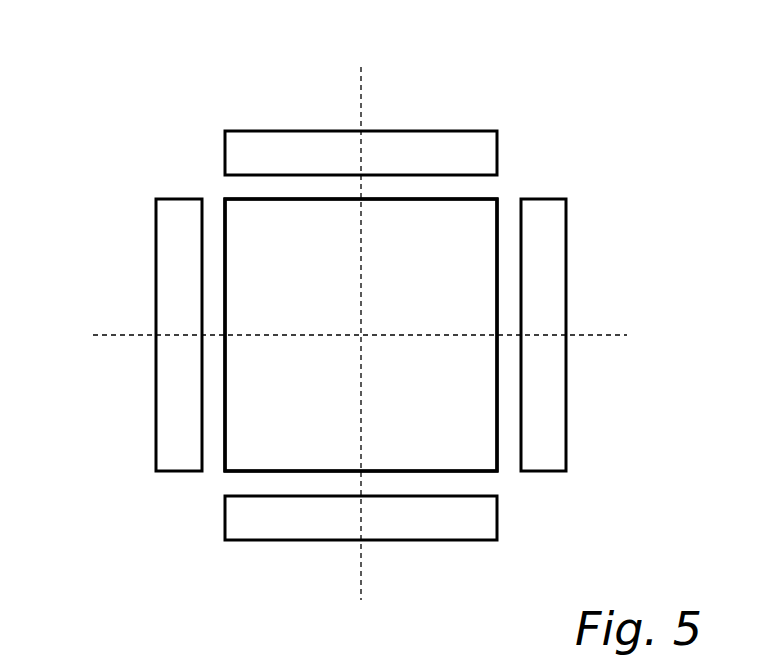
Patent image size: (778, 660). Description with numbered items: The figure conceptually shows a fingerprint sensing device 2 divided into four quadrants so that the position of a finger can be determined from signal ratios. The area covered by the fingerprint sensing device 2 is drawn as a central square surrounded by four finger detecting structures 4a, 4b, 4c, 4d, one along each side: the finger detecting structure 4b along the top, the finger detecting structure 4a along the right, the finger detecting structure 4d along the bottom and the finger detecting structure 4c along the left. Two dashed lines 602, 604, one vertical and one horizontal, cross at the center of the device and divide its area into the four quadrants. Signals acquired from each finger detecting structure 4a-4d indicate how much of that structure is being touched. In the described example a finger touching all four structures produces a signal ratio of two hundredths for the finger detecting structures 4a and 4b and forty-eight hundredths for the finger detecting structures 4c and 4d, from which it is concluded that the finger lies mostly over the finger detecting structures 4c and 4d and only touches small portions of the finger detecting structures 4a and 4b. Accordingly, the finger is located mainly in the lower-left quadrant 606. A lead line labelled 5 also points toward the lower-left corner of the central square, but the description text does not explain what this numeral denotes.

The fingerprint sensing device 2 is at (627, 72).
The substrate 5 is at (243, 460).
The quadrant 606 is at (243, 427).
The dashed line 602 is at (359, 319).
The dashed line 604 is at (384, 338).
The finger detecting structure 4a is at (552, 250).
The finger detecting structure 4b is at (468, 148).
The finger detecting structure 4c is at (172, 250).
The finger detecting structure 4d is at (292, 532).